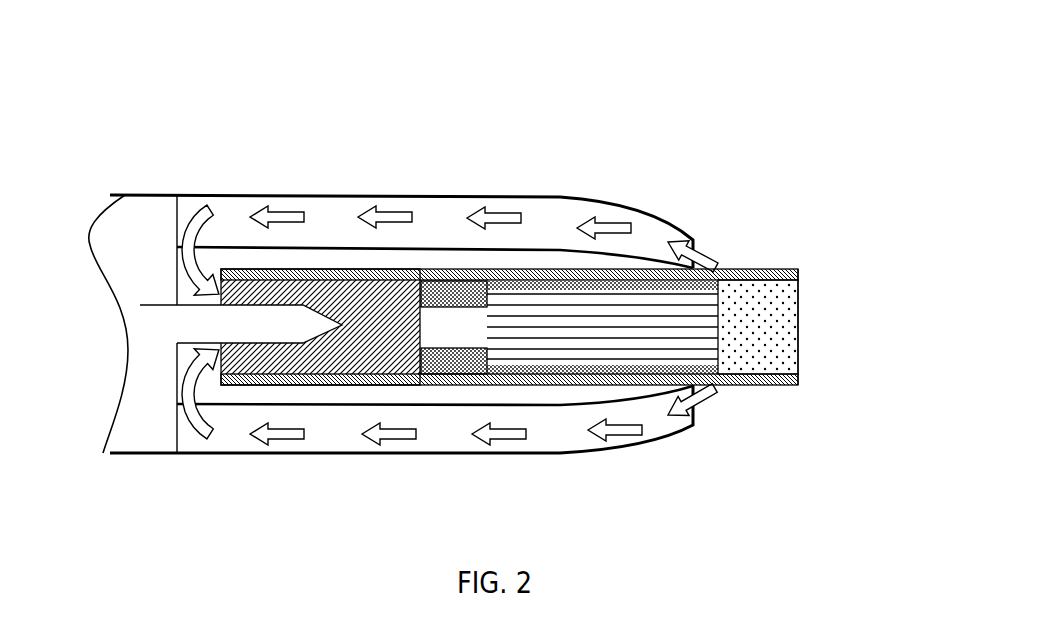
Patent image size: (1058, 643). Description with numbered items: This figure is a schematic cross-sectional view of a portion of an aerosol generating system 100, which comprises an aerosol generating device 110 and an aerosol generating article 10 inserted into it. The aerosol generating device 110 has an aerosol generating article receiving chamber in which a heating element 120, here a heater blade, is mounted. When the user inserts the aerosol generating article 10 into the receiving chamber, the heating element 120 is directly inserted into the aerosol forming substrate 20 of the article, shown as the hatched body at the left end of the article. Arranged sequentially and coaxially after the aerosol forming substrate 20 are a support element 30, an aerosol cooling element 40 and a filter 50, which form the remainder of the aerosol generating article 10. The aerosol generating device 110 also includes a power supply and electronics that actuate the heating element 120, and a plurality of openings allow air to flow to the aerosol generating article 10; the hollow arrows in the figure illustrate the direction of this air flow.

The aerosol generating system 100 is at (732, 134).
The aerosol generating device 110 is at (121, 154).
The aerosol generating article 10 is at (840, 282).
The aerosol forming substrate 20 is at (380, 345).
The heating element 120 is at (275, 328).
The support element 30 is at (462, 298).
The aerosol cooling element 40 is at (563, 342).
The filter 50 is at (760, 328).